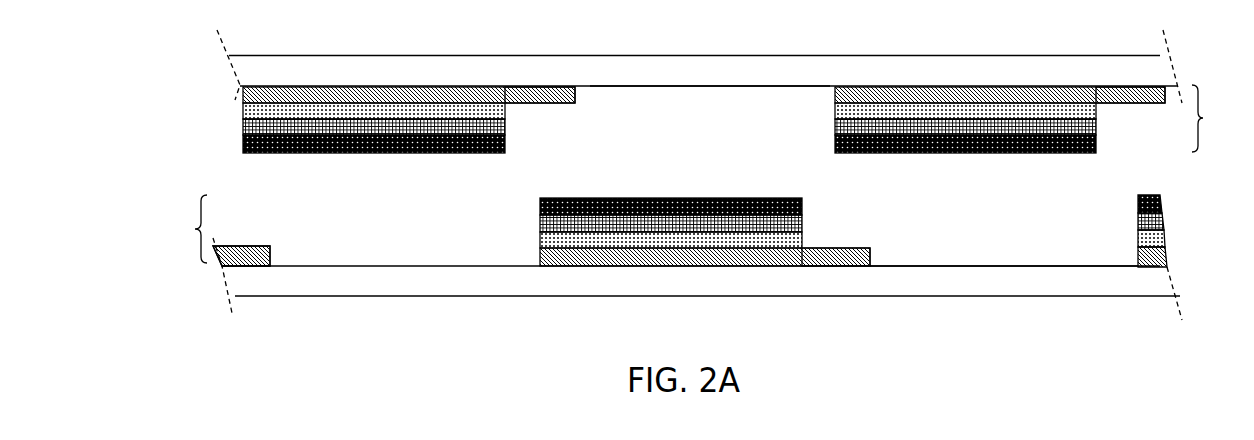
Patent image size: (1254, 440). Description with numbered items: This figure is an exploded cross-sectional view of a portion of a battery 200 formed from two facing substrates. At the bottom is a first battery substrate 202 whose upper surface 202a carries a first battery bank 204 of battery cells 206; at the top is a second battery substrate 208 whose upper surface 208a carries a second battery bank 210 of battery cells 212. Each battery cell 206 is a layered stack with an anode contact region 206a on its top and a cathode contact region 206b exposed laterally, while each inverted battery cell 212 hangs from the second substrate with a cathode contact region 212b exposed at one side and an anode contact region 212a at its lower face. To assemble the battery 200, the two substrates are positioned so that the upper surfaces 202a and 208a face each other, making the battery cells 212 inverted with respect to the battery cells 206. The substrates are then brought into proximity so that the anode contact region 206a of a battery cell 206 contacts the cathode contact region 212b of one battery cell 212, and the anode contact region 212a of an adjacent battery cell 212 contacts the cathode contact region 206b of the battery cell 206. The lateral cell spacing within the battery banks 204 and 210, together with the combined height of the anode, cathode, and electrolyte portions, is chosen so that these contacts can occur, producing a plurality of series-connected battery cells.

The battery 200 is at (699, 226).
The first battery substrate 202 is at (701, 282).
The upper surface of first battery substrate 202a is at (918, 264).
The first battery bank 204 is at (177, 229).
The battery cell 206 is at (253, 268).
The anode contact region 206a is at (663, 195).
The cathode contact region 206b is at (242, 244).
The second battery substrate 208 is at (703, 71).
The upper surface of second battery substrate 208a is at (772, 92).
The second battery bank 210 is at (1221, 118).
The battery cell 212 is at (419, 80).
The anode contact region 212a is at (385, 156).
The cathode contact region 212b is at (523, 108).